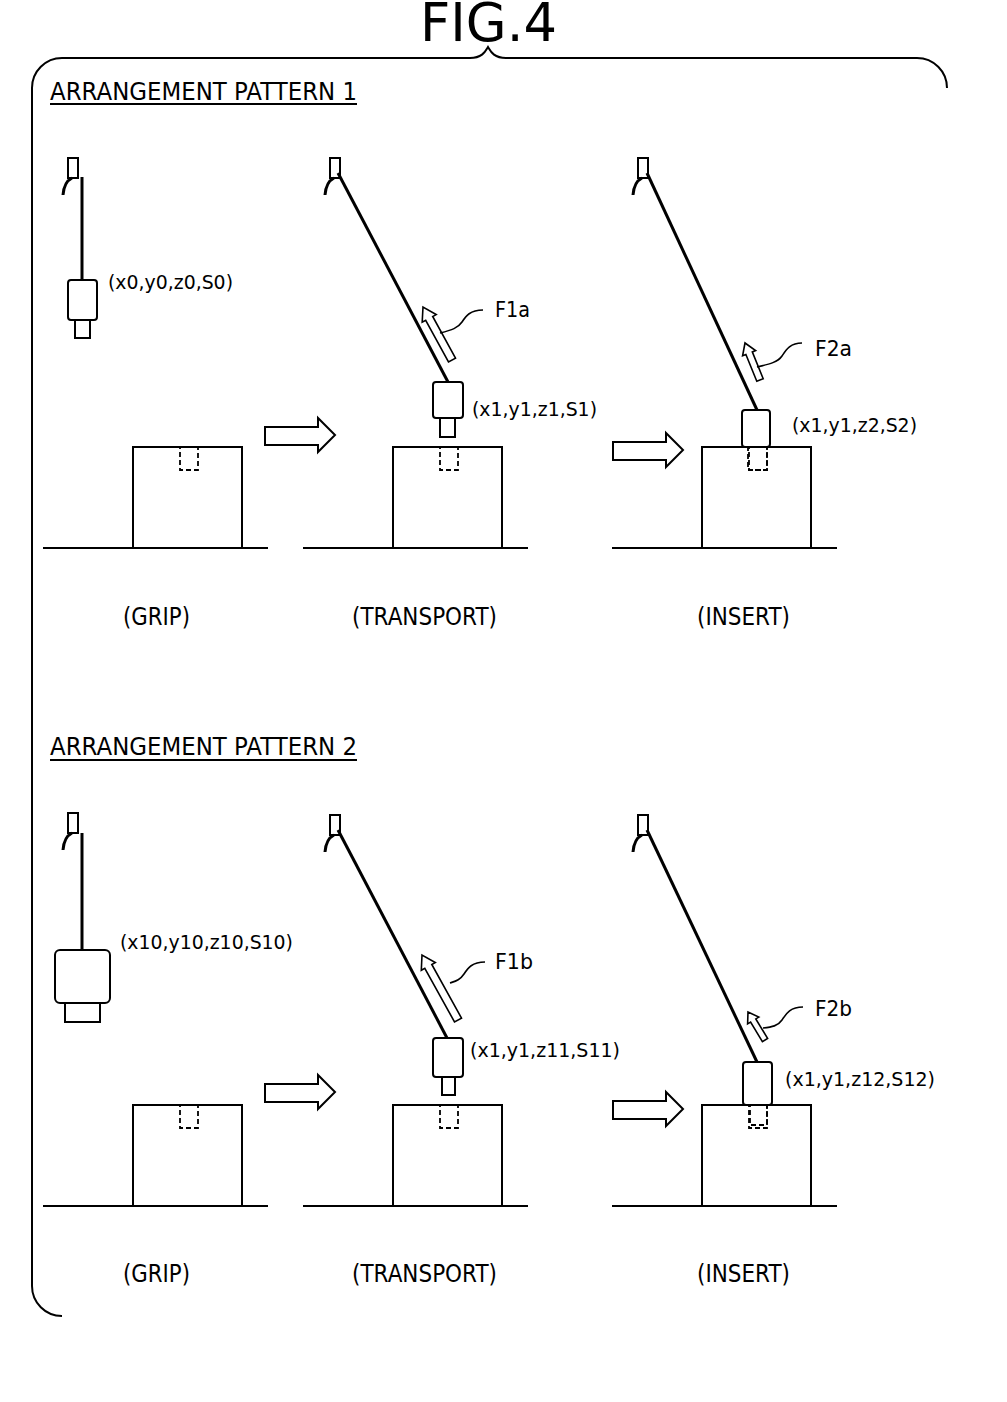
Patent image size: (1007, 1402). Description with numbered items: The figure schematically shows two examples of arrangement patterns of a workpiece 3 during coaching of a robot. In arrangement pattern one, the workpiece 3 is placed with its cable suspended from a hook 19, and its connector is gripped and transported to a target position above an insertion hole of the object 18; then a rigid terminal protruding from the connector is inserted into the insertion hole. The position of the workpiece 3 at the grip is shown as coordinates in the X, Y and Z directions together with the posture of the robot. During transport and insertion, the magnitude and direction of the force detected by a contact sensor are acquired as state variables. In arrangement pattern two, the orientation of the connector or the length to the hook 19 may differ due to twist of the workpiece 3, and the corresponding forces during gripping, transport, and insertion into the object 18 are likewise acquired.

The workpiece 3 is at (418, 649).
The object 18 is at (440, 826).
The hook 19 is at (402, 490).